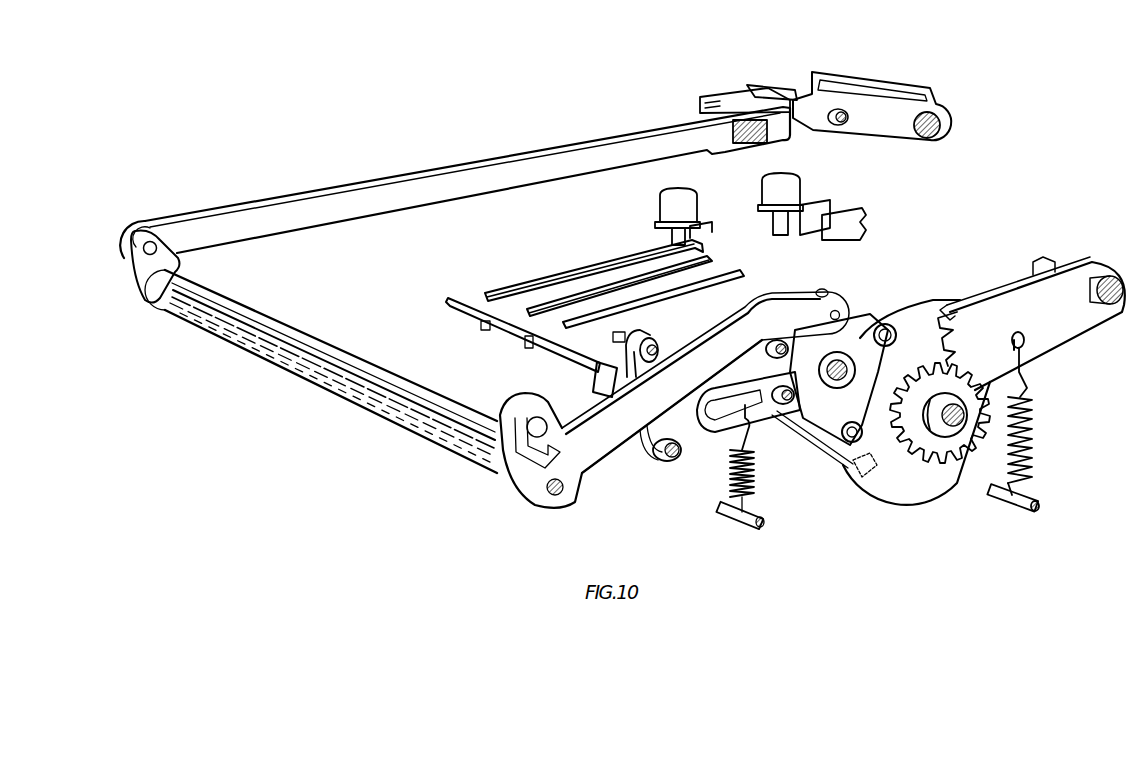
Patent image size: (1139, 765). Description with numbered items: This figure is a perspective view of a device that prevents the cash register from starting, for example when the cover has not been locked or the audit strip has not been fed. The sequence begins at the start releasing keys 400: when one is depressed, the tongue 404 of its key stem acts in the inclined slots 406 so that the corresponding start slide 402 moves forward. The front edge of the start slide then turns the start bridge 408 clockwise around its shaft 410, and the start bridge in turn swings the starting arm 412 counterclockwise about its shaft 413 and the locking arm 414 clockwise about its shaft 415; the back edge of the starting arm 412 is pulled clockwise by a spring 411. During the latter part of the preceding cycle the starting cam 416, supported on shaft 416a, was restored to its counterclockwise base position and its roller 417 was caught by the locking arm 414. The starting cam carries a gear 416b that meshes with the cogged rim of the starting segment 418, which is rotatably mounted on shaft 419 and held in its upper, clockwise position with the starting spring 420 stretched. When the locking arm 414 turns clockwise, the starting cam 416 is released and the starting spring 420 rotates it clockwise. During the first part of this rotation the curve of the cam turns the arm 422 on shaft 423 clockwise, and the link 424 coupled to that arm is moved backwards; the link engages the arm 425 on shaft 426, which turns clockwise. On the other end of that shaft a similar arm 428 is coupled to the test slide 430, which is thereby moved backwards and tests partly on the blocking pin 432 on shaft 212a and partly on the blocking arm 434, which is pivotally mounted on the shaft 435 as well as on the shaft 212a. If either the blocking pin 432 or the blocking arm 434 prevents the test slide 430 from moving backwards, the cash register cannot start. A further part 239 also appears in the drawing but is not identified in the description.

The test slide 430 is at (484, 170).
The arm 428 is at (160, 303).
The shaft 426 is at (412, 402).
The link 424 is at (674, 420).
The arm 425 is at (518, 405).
The starting arm 412 is at (639, 462).
The shaft 413 is at (672, 463).
The locking arm 414 is at (772, 407).
The shaft 415 is at (800, 410).
The spring 411 is at (755, 478).
The shaft 423 is at (770, 353).
The arm 422 is at (855, 340).
The roller 417 is at (870, 473).
The starting cam 416 is at (925, 497).
The shaft 416a is at (958, 423).
The gear 416b is at (940, 457).
The shaft 419 is at (1122, 315).
The starting segment 418 is at (1035, 343).
The starting spring 420 is at (1035, 440).
The start slide 402 is at (633, 297).
The start bridge 408 is at (470, 300).
The shaft 410 is at (632, 336).
The inclined slots 406 is at (840, 238).
The tongue 404 is at (780, 230).
The start releasing keys 400 is at (777, 187).
The blocking pin 432 is at (737, 98).
The shaft 212a is at (770, 73).
The latch 239 is at (763, 135).
The blocking arm 434 is at (873, 128).
The shaft 435 is at (943, 143).